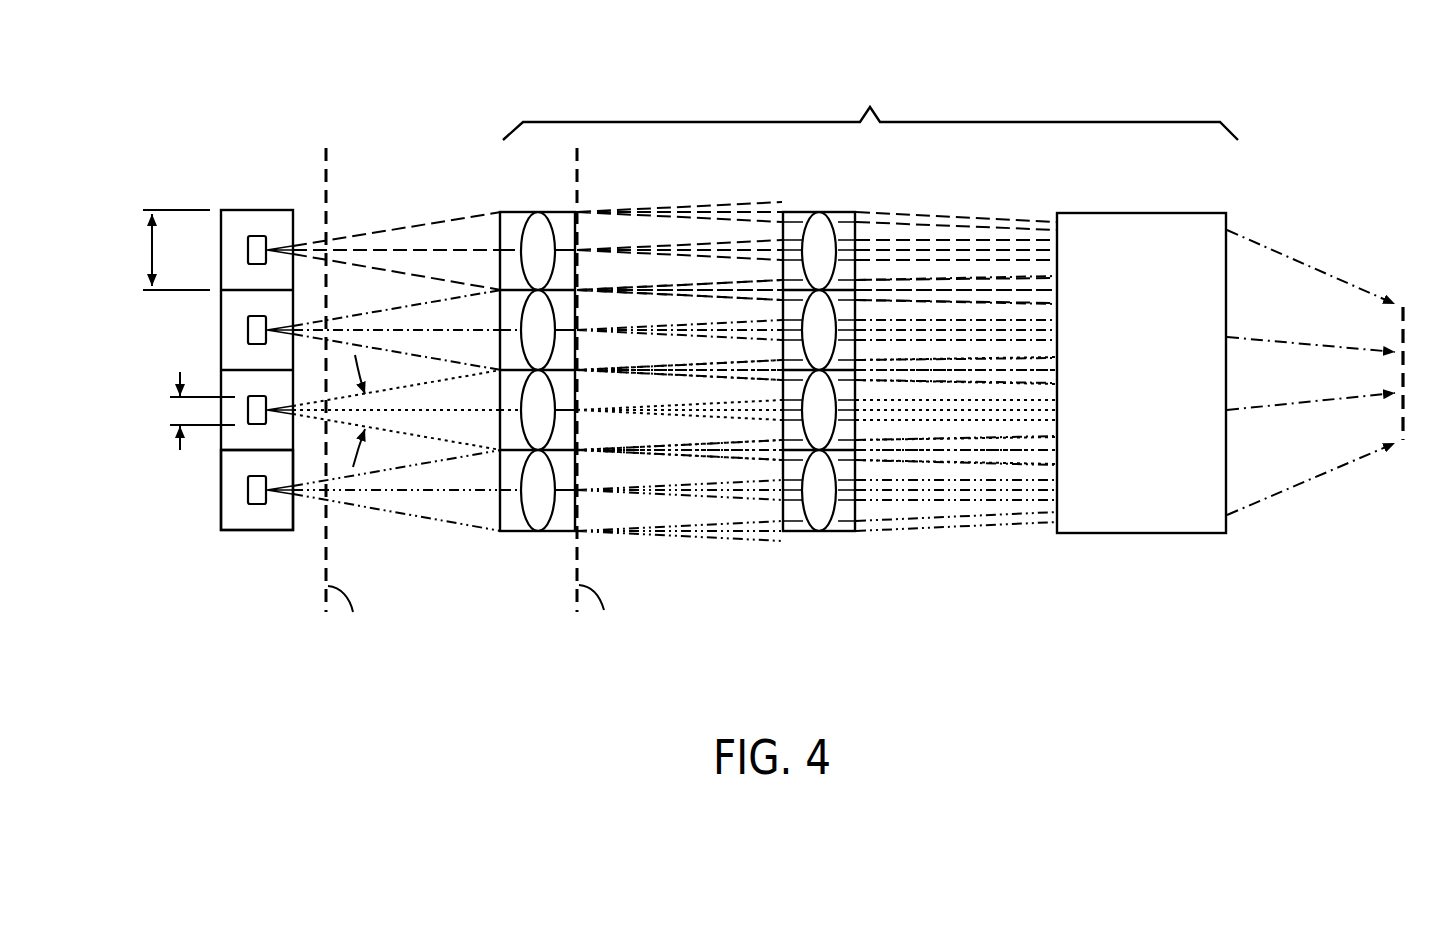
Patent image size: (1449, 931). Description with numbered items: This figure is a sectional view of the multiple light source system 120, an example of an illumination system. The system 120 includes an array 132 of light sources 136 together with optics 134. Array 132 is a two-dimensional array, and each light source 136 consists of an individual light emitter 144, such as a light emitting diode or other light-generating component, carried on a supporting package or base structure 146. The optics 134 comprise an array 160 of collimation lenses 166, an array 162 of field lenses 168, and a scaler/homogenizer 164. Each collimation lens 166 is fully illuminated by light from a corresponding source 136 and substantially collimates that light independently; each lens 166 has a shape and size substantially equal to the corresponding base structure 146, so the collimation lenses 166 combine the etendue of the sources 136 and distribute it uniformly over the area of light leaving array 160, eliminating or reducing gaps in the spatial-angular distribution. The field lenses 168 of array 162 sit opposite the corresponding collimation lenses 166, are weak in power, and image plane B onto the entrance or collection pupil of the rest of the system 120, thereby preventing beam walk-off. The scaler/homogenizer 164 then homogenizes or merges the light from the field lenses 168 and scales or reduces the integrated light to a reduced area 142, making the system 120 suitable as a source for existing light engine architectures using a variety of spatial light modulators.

The multiple light source system 120 is at (1130, 80).
The array of light sources 132 is at (236, 534).
The optics 134 is at (853, 353).
The light source 136 is at (217, 224).
The reduced area 142 is at (1406, 326).
The light emitter 144 is at (250, 496).
The base structure 146 is at (221, 521).
The array of collimation lenses 160 is at (518, 538).
The array of field lenses 162 is at (798, 538).
The scaler/homogenizer 164 is at (1140, 535).
The collimation lens 166 is at (559, 533).
The field lens 168 is at (823, 533).